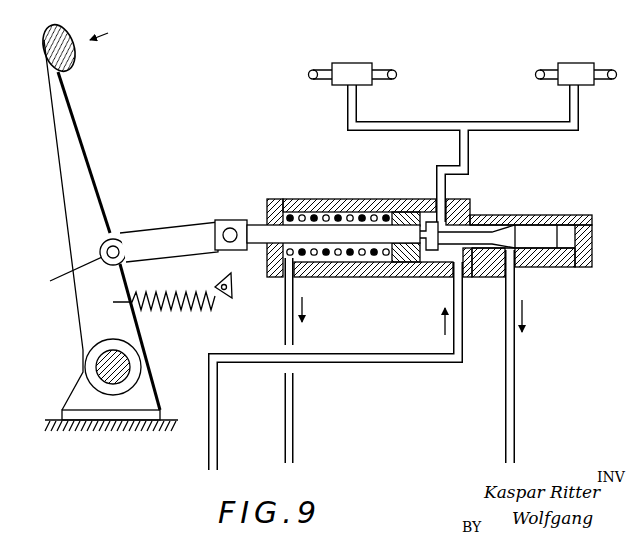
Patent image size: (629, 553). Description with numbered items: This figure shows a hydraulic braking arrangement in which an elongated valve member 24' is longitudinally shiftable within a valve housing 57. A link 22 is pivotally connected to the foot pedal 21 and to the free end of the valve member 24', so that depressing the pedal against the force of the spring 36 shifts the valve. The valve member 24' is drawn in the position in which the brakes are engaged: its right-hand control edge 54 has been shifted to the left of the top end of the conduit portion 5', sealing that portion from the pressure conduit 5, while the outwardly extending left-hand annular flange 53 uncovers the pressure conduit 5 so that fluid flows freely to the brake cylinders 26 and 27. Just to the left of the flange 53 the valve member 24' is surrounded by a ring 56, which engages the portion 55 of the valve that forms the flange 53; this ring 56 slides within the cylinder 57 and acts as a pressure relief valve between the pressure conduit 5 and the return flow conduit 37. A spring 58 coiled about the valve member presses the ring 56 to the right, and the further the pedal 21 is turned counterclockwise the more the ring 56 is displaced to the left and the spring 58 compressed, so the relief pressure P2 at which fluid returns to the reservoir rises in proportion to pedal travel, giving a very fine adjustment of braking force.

The foot pedal 21 is at (70, 66).
The link 22 is at (170, 238).
The spring 36 is at (178, 300).
The return flow conduit 37 is at (285, 312).
The valve housing 57 is at (350, 178).
The ring 56 is at (418, 210).
The portion of the valve 55 is at (398, 264).
The spring 58 is at (333, 258).
The annular flange 53 is at (432, 221).
The valve member 24' is at (476, 217).
The control edge 54 is at (527, 223).
The brake cylinder 26 is at (358, 70).
The brake cylinder 27 is at (576, 73).
The pressure conduit 5 is at (335, 366).
The conduit portion 5' is at (533, 356).
The pressure P2 is at (311, 309).